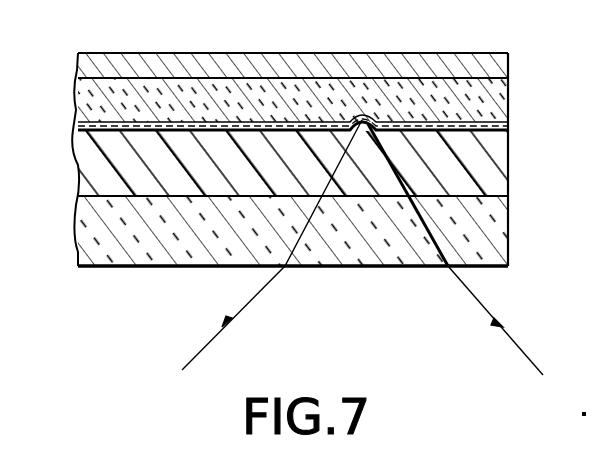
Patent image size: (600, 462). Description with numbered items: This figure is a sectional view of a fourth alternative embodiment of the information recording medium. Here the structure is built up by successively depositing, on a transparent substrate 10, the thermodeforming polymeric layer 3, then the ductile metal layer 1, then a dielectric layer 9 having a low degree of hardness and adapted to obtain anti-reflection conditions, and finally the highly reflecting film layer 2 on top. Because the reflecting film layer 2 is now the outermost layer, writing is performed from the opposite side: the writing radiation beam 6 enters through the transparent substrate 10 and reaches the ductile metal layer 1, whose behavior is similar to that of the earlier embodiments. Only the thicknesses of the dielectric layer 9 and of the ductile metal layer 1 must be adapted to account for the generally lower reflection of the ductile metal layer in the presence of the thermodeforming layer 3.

The ductile metal layer 1 is at (84, 124).
The highly reflecting film layer 2 is at (446, 53).
The thermodeforming polymeric layer 3 is at (80, 174).
The writing radiation beam 6 is at (248, 300).
The dielectric layer 9 is at (493, 103).
The substrate 10 is at (500, 232).